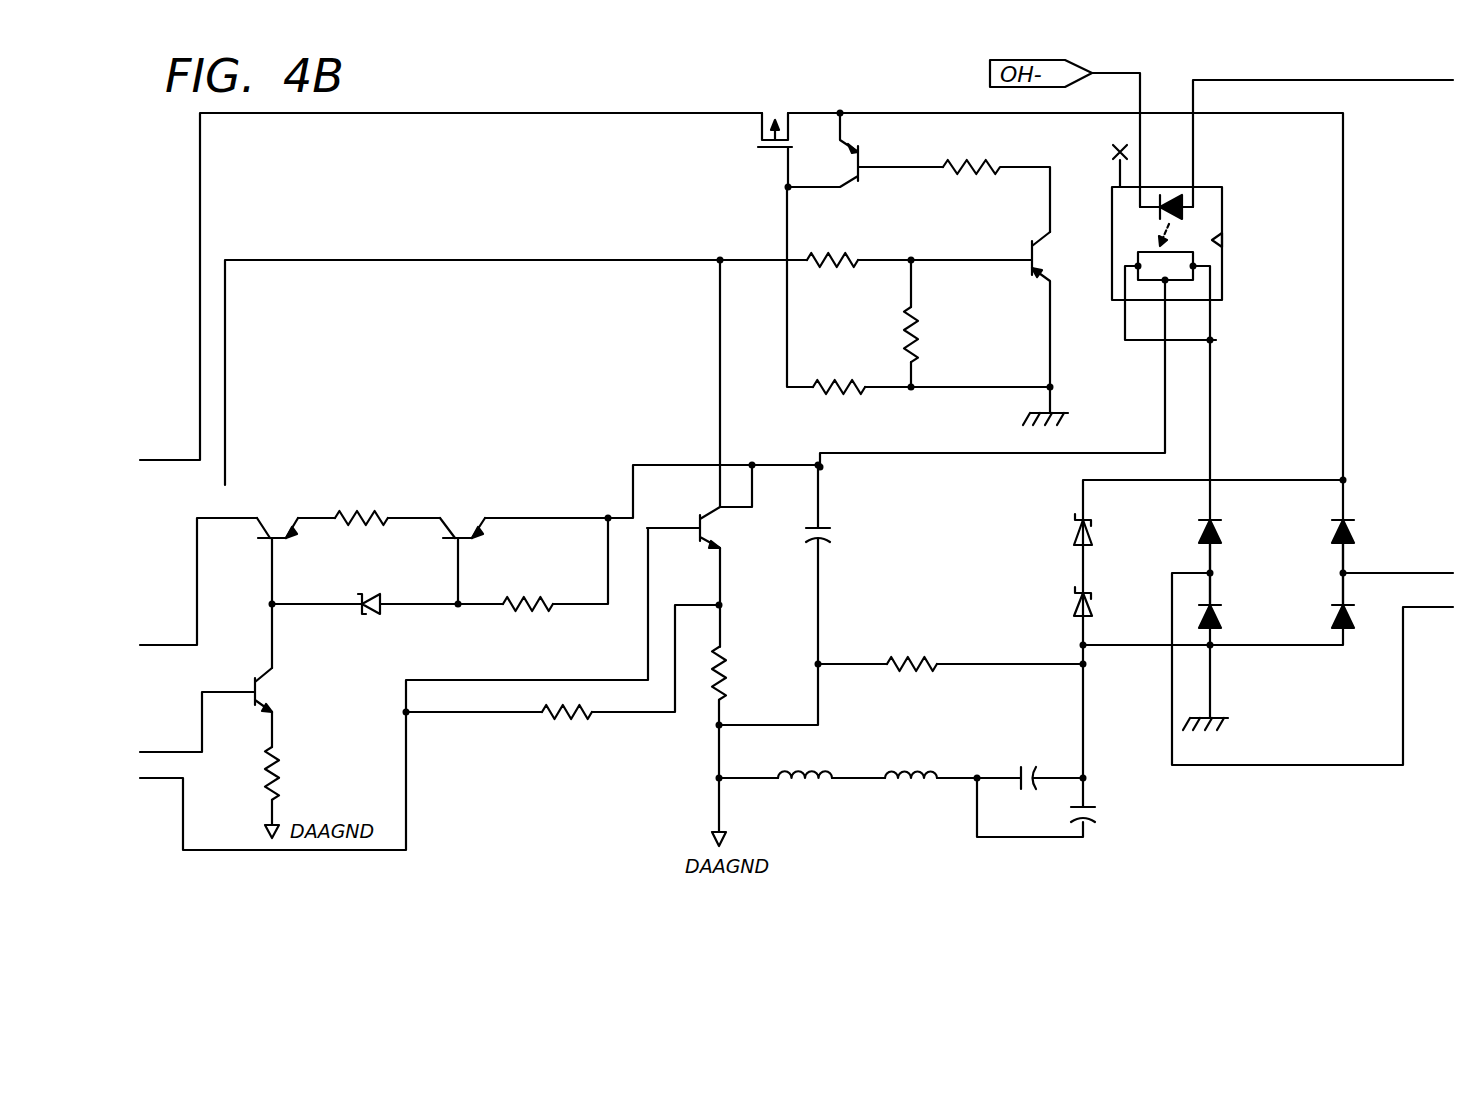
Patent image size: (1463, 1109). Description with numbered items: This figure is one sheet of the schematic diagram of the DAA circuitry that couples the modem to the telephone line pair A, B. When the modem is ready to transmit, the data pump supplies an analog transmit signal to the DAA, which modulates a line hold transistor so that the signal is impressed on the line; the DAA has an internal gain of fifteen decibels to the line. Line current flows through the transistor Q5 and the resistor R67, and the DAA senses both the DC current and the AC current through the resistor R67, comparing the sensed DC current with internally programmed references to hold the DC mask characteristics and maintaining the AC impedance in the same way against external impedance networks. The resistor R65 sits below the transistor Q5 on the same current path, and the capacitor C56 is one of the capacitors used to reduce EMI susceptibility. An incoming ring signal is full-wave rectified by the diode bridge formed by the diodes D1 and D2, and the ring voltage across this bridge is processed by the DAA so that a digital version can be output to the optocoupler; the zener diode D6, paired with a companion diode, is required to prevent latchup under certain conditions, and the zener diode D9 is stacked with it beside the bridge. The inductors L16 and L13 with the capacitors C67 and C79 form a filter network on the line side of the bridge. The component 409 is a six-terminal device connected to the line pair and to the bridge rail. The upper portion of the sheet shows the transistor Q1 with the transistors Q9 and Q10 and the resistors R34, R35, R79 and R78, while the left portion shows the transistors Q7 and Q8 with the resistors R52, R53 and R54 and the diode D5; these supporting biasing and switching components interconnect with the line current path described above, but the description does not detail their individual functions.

The solid-state relay U20 409 is at (1222, 220).
The MOSFET ZVP3310F Q1 is at (796, 112).
The transistor A92 Q9 is at (865, 170).
The resistor 1.21M R34 is at (996, 196).
The transistor A42 Q10 is at (1054, 296).
The resistor 1.21H R35 is at (840, 287).
The resistor 200K R79 is at (939, 334).
The resistor 1.21M R78 is at (841, 414).
The diode D6 is at (1116, 529).
The zener diode 43V D9 is at (1116, 604).
The diode bridge diode D2 is at (1260, 566).
The diode bridge diode D1 is at (1381, 572).
The resistor R67 is at (914, 622).
The capacitor C56 is at (845, 525).
The transistor Q5 is at (748, 547).
The resistor 2.21 R65 is at (747, 674).
The inductor 0ohm L16 is at (808, 816).
The inductor 220uH L13 is at (916, 817).
The capacitor 270nF C67 is at (1019, 734).
The capacitor 270nF C79 is at (1138, 821).
The transistor A92 Q7 is at (273, 503).
The resistor 10.0 R52 is at (361, 488).
The diode ZC5800 D5 is at (380, 627).
The resistor 10.0K R53 is at (525, 633).
The transistor A42 Q8 is at (293, 695).
The resistor 221 R54 is at (297, 773).